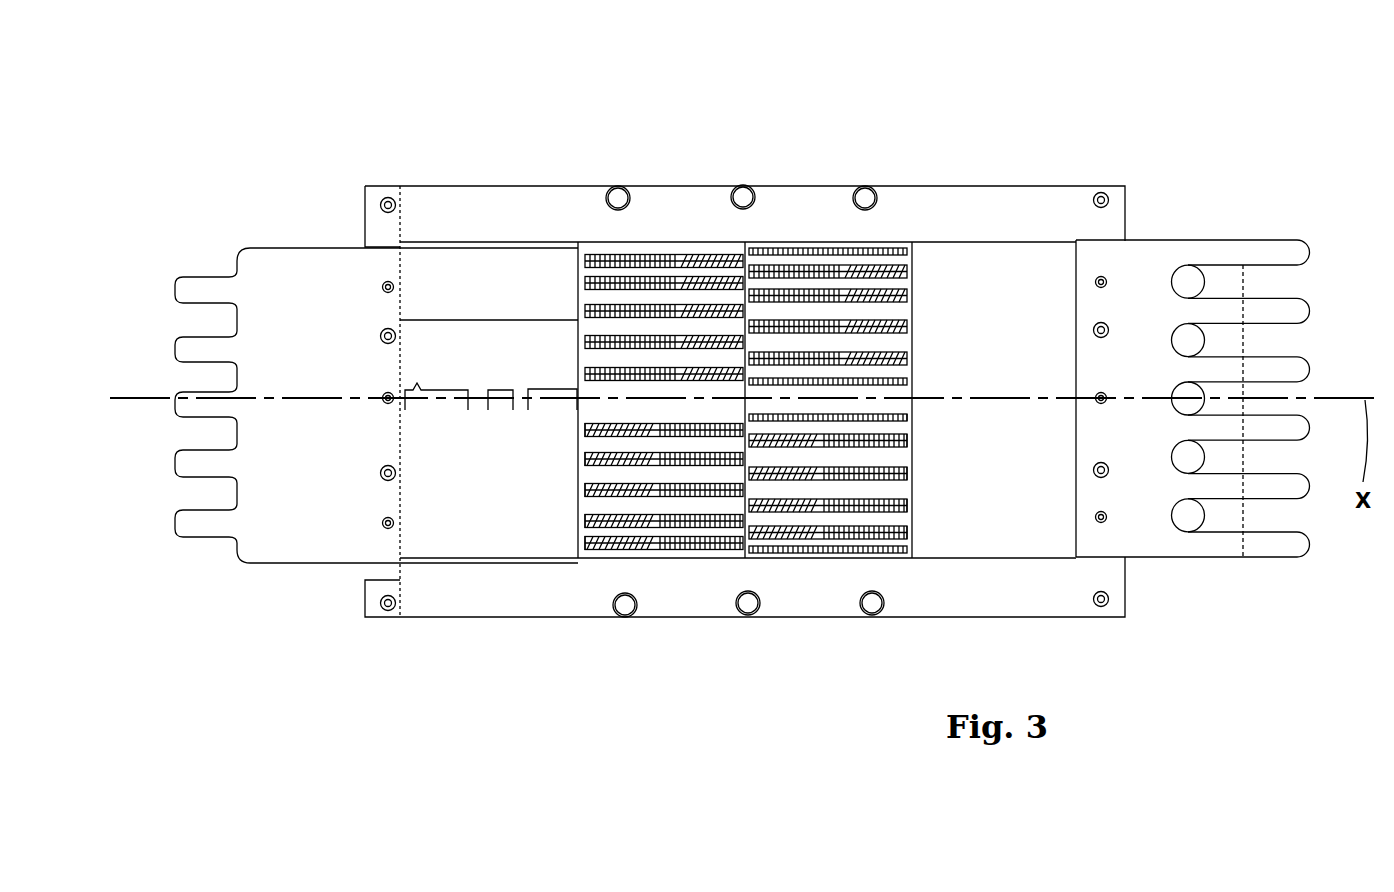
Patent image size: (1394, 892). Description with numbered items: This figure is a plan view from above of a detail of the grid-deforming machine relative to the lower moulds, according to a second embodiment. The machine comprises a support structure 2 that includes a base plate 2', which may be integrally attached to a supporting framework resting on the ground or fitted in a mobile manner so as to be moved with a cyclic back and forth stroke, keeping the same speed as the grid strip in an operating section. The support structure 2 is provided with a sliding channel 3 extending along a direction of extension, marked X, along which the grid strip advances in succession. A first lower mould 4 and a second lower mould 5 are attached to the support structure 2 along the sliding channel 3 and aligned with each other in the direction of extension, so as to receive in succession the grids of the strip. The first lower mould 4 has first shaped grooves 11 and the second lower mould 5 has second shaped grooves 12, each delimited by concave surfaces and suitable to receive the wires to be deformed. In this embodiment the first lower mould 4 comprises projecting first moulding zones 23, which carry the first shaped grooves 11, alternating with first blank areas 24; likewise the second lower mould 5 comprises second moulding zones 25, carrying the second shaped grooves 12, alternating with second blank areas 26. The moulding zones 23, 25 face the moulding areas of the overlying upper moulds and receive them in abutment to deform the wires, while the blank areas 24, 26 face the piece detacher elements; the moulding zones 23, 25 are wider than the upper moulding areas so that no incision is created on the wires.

The support structure 2 is at (1192, 308).
The base plate 2' is at (745, 359).
The sliding channel 3 is at (482, 293).
The first lower mould 4 is at (690, 552).
The second lower mould 5 is at (852, 555).
The first shaped grooves 11 is at (635, 547).
The second shaped grooves 12 is at (828, 532).
The first moulding zones 23 is at (585, 430).
The first blank areas 24 is at (687, 508).
The second moulding zones 25 is at (912, 420).
The second blank areas 26 is at (783, 495).